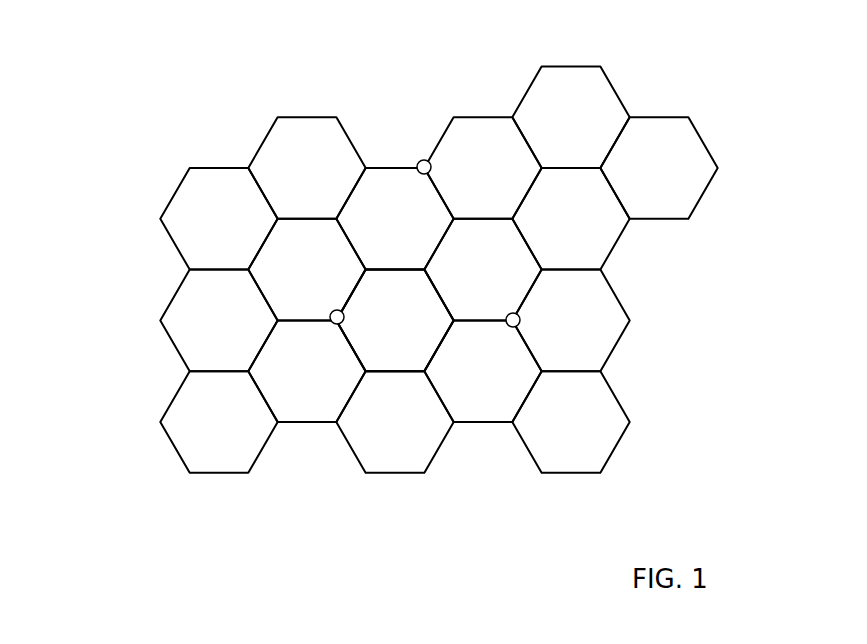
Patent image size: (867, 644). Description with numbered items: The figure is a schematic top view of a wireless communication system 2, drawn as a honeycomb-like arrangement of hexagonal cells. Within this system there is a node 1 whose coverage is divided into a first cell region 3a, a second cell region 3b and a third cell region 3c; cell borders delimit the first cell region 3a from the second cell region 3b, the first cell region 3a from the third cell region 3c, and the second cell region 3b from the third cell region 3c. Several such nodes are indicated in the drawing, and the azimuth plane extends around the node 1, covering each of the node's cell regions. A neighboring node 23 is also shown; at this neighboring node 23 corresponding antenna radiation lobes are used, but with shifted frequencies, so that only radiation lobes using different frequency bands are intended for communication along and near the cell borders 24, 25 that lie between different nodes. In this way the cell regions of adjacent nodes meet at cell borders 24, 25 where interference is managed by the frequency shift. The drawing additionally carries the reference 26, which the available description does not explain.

The node 1 is at (342, 311).
The wireless communication system 2 is at (248, 100).
The first cell region 3a is at (305, 268).
The second cell region 3b is at (408, 332).
The third cell region 3c is at (283, 372).
The neighboring node 23 is at (430, 171).
The cell border 24 is at (338, 310).
The cell border 25 is at (390, 267).
The cell interior 26 is at (393, 200).